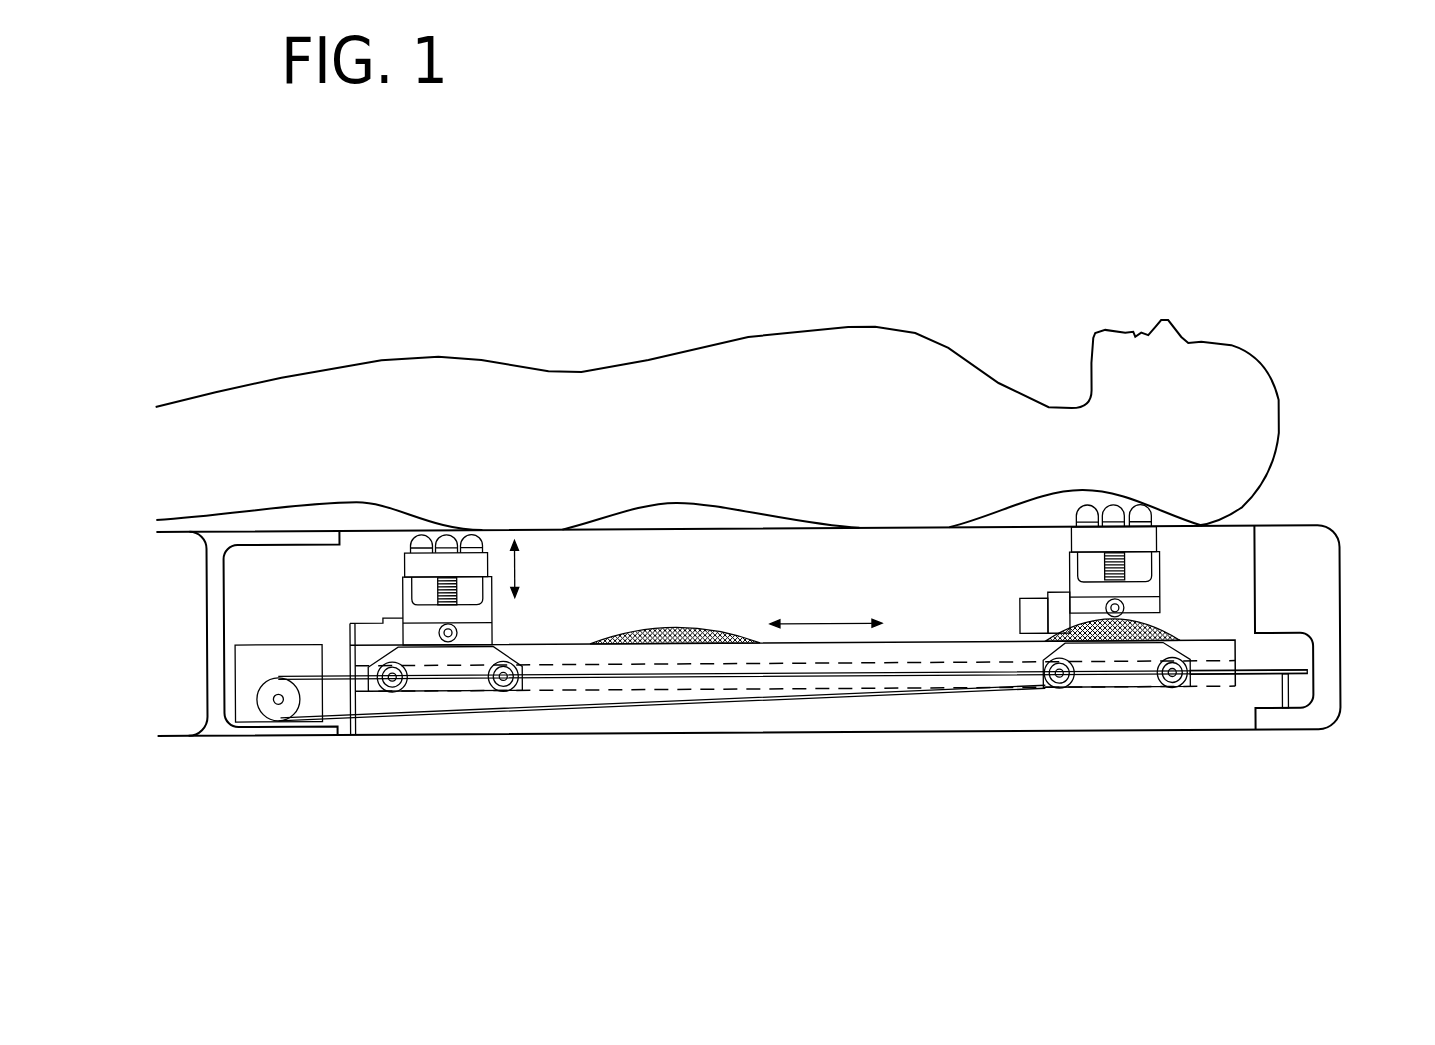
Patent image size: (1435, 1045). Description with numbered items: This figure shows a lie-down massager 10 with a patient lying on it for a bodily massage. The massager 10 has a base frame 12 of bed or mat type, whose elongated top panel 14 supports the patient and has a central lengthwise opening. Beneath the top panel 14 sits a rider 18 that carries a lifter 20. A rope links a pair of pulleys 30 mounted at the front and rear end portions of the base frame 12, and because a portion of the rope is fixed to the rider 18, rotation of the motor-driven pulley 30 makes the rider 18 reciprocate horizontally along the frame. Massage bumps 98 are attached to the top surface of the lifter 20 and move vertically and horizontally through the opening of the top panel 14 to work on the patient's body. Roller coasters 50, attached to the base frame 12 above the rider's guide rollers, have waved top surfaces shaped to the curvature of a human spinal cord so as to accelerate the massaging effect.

The lie-down massager 10 is at (803, 200).
The base frame 12 is at (1352, 584).
The elongated top panel 14 is at (1315, 528).
The rider 18 is at (395, 645).
The lifter 20 is at (407, 585).
The pulleys 30 is at (283, 709).
The roller coasters 50 is at (673, 643).
The massage bumps 98 is at (422, 533).